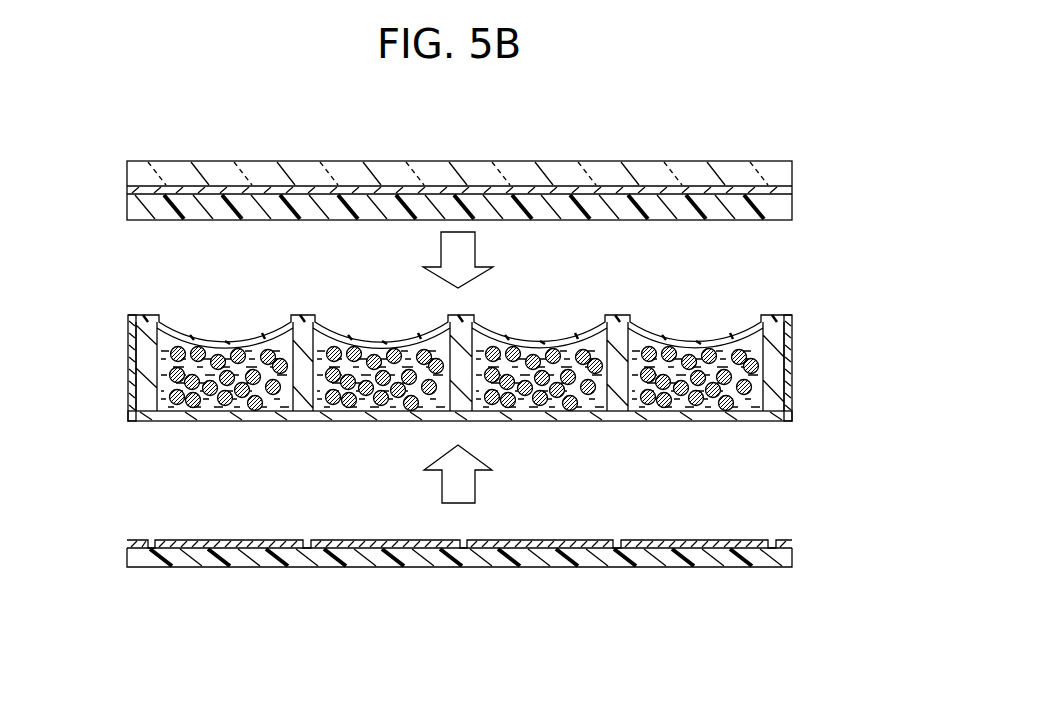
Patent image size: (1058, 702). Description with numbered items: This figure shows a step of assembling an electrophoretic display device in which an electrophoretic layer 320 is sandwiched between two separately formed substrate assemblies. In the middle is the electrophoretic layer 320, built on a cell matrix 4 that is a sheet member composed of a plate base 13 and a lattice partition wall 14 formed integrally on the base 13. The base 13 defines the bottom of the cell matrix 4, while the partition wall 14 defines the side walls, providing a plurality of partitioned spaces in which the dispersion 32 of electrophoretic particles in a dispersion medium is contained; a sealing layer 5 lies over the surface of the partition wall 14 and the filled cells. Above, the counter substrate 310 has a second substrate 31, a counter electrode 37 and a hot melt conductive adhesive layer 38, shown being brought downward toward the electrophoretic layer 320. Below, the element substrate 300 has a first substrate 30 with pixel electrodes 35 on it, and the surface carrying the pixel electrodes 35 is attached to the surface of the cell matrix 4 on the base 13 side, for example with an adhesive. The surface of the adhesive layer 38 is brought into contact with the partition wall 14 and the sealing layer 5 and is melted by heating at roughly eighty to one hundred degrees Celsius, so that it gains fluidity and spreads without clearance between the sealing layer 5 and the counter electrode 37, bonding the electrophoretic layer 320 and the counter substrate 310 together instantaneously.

The counter substrate 310 is at (469, 163).
The second substrate 31 is at (721, 172).
The counter electrode 37 is at (787, 189).
The hot melt conductive adhesive layer 38 is at (787, 208).
The electrophoretic layer 320 is at (502, 393).
The sealing layer 5 is at (538, 342).
The dispersion 32 is at (560, 400).
The partition wall 14 is at (619, 404).
The base 13 is at (668, 415).
The cell matrix 4 is at (460, 421).
The element substrate 300 is at (431, 564).
The pixel electrodes 35 is at (732, 540).
The first substrate 30 is at (702, 558).